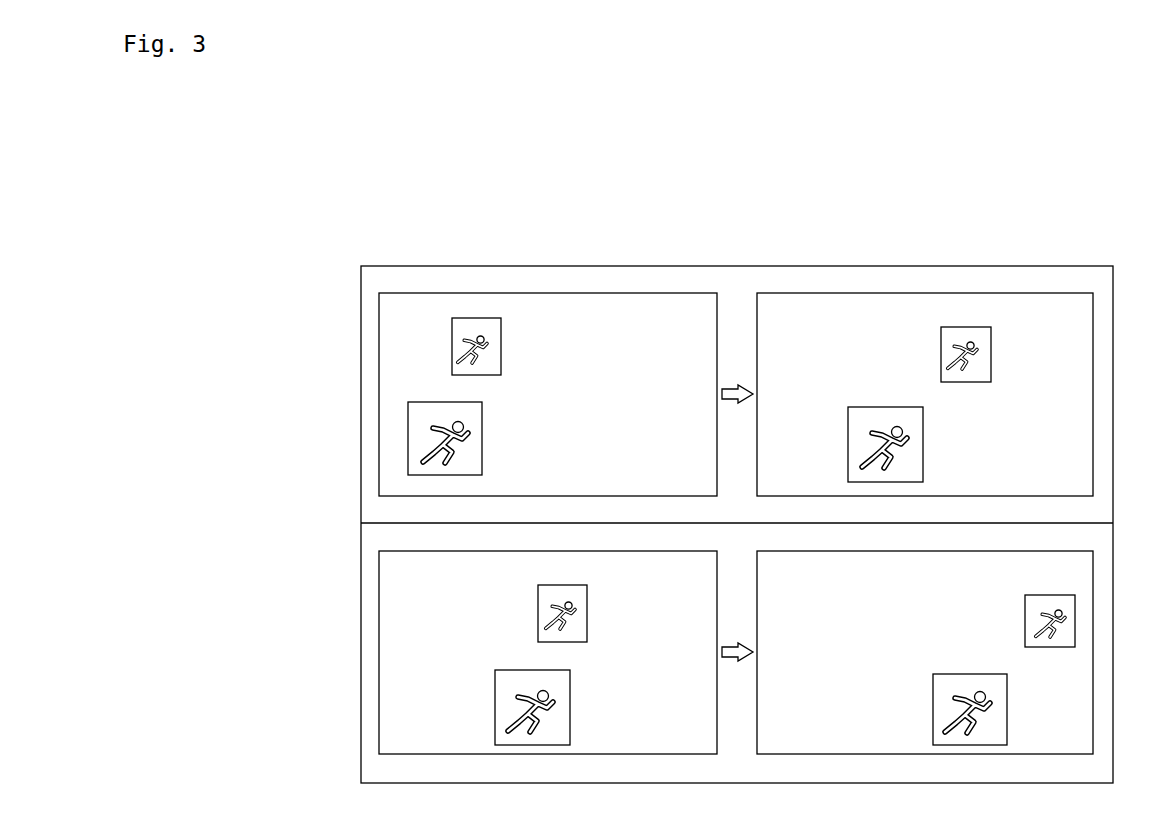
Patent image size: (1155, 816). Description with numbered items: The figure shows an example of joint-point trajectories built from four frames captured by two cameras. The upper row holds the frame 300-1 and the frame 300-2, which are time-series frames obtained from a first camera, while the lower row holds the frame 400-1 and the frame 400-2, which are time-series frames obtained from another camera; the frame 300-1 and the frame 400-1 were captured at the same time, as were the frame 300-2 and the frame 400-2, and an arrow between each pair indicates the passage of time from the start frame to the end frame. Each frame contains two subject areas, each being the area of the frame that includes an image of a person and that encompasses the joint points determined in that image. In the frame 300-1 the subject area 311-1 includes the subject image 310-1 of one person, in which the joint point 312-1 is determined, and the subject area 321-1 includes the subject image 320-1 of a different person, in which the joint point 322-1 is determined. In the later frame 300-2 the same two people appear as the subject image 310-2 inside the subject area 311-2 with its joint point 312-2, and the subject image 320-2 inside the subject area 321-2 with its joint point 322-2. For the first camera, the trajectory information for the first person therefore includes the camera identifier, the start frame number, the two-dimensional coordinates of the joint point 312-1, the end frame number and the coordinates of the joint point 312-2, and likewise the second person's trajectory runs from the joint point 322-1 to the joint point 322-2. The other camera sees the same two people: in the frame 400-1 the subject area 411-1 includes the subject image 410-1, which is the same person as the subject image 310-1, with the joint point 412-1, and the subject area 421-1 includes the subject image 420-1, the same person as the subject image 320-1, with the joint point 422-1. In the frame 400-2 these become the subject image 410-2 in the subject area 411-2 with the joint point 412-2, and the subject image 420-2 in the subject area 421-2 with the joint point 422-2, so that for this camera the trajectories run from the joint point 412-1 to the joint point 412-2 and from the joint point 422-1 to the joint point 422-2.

The frame 300-1 is at (661, 297).
The frame 300-2 is at (1039, 297).
The subject image 310-1 is at (464, 419).
The subject area 311-1 is at (432, 404).
The joint point 312-1 is at (472, 428).
The subject image 320-1 is at (477, 343).
The subject area 321-1 is at (477, 319).
The joint point 322-1 is at (487, 340).
The subject image 310-2 is at (886, 446).
The subject area 311-2 is at (878, 409).
The joint point 312-2 is at (910, 430).
The subject image 320-2 is at (961, 350).
The subject area 321-2 is at (961, 328).
The joint point 322-2 is at (977, 344).
The frame 400-1 is at (661, 555).
The frame 400-2 is at (1039, 555).
The subject image 410-1 is at (551, 688).
The subject area 411-1 is at (524, 672).
The joint point 412-1 is at (558, 697).
The subject image 420-1 is at (564, 612).
The subject area 421-1 is at (567, 587).
The joint point 422-1 is at (575, 605).
The subject image 410-2 is at (973, 710).
The subject area 411-2 is at (960, 675).
The joint point 412-2 is at (996, 694).
The subject image 420-2 is at (1014, 599).
The subject area 421-2 is at (1050, 594).
The joint point 422-2 is at (1029, 624).